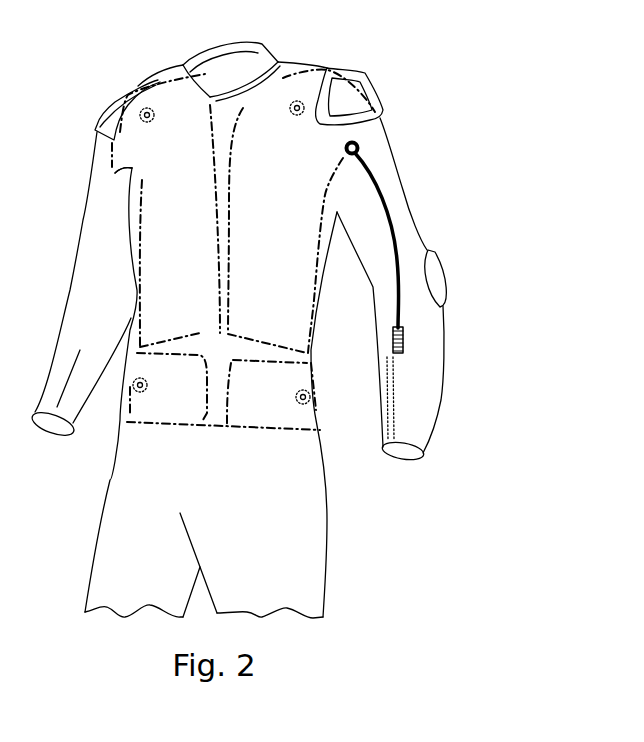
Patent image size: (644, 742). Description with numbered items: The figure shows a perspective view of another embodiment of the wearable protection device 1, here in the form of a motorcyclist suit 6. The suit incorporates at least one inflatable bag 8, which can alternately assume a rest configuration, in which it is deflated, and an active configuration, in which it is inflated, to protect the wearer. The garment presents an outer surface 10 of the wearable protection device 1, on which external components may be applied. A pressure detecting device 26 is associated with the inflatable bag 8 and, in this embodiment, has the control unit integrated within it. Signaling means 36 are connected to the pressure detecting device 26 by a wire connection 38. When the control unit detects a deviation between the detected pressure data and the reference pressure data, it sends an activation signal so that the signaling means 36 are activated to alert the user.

The wearable protection device 1 is at (553, 101).
The motorcyclist suit 6 is at (92, 124).
The inflatable bag 8 is at (115, 173).
The outer surface 10 is at (415, 418).
The pressure detecting device 26 is at (372, 143).
The signaling means 36 is at (403, 343).
The wire connection 38 is at (388, 208).